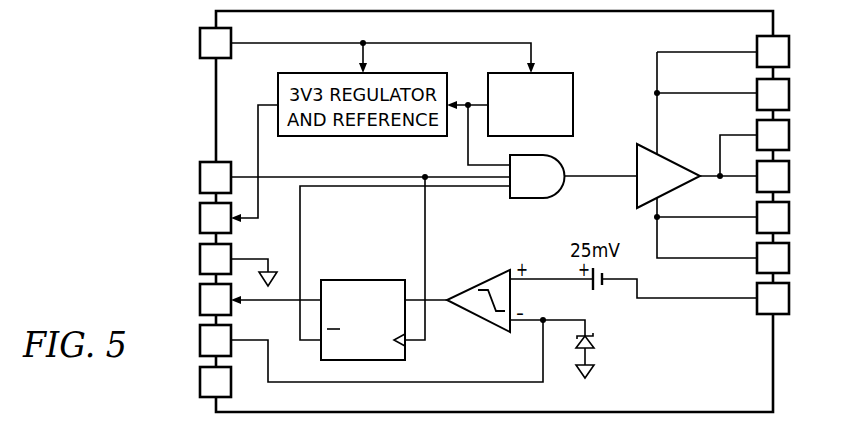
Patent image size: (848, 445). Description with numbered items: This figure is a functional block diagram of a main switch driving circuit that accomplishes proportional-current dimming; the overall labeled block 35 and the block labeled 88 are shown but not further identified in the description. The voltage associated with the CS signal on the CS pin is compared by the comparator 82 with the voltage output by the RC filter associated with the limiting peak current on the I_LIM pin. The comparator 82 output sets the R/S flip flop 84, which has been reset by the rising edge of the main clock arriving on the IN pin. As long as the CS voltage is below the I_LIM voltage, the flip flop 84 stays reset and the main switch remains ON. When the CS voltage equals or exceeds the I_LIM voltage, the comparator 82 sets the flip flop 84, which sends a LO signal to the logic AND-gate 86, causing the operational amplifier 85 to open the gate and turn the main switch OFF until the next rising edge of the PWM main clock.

The hot-swap controller 35 is at (216, 115).
The comparator 82 is at (485, 282).
The R/S flip flop 84 is at (362, 280).
The operational amplifier 85 is at (637, 190).
The logic AND-gate 86 is at (535, 198).
The undervoltage lockout circuit 88 is at (575, 101).